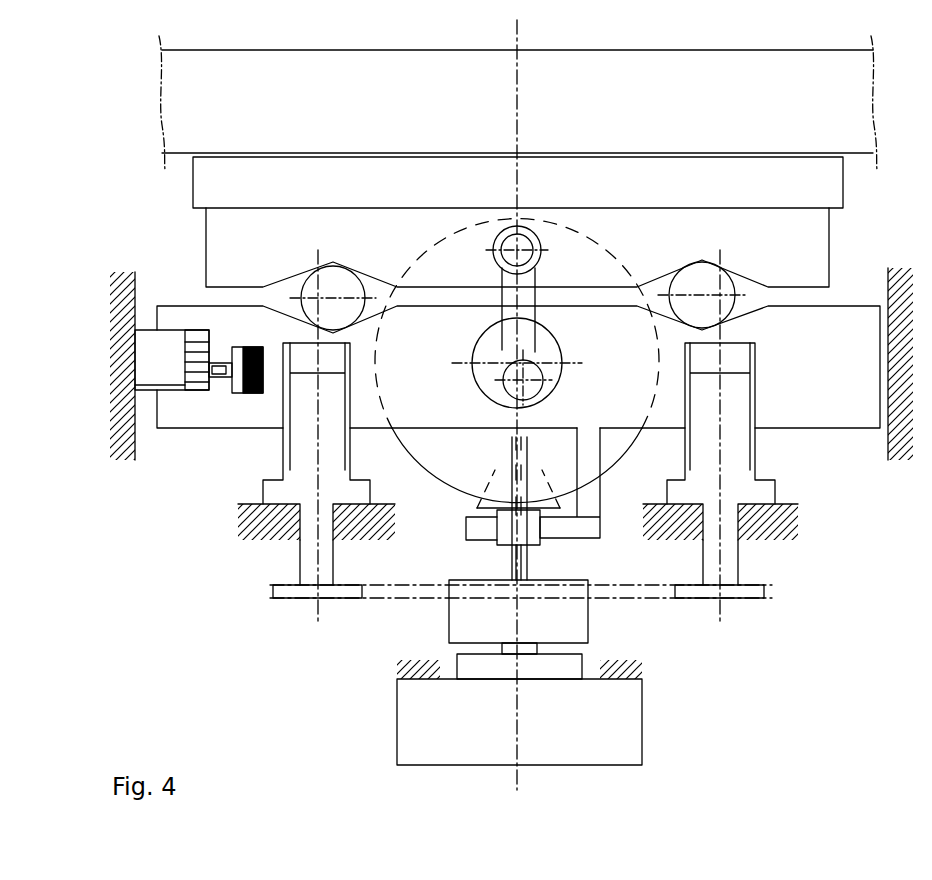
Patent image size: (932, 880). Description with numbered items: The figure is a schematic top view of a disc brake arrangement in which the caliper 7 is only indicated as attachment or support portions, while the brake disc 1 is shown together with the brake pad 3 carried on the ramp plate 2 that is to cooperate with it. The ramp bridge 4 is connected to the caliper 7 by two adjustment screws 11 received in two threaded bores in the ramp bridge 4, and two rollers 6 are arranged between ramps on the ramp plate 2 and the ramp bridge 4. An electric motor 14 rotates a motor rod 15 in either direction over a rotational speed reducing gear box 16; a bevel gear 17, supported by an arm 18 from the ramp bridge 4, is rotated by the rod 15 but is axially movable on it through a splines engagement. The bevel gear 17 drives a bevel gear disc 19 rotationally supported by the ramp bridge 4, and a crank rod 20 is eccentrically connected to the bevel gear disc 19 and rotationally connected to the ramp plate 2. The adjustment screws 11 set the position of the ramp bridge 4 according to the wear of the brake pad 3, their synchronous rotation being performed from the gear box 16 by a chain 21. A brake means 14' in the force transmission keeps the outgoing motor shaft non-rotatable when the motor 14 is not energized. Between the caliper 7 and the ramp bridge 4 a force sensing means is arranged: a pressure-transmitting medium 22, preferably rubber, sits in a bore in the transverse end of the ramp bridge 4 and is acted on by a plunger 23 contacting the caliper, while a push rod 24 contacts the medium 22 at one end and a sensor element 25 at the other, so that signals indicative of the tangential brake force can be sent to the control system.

The brake disc 1 is at (192, 95).
The brake pad 3 is at (215, 184).
The ramp plate 2 is at (222, 247).
The ramp bridge 4 is at (170, 318).
The rollers 6 is at (345, 282).
The caliper 7 is at (122, 441).
The adjustment screws 11 is at (307, 467).
The electric motor 14 is at (552, 712).
The brake means 14' is at (588, 659).
The motor rod 15 is at (530, 560).
The gear box 16 is at (575, 613).
The bevel gear 17 is at (473, 508).
The arm 18 is at (590, 520).
The bevel gear disc 19 is at (443, 455).
The crank rod 20 is at (545, 280).
The chain 21 is at (416, 592).
The pressure-transmitting medium 22 is at (195, 338).
The plunger 23 is at (160, 365).
The push rod 24 is at (228, 378).
The sensor element 25 is at (250, 393).